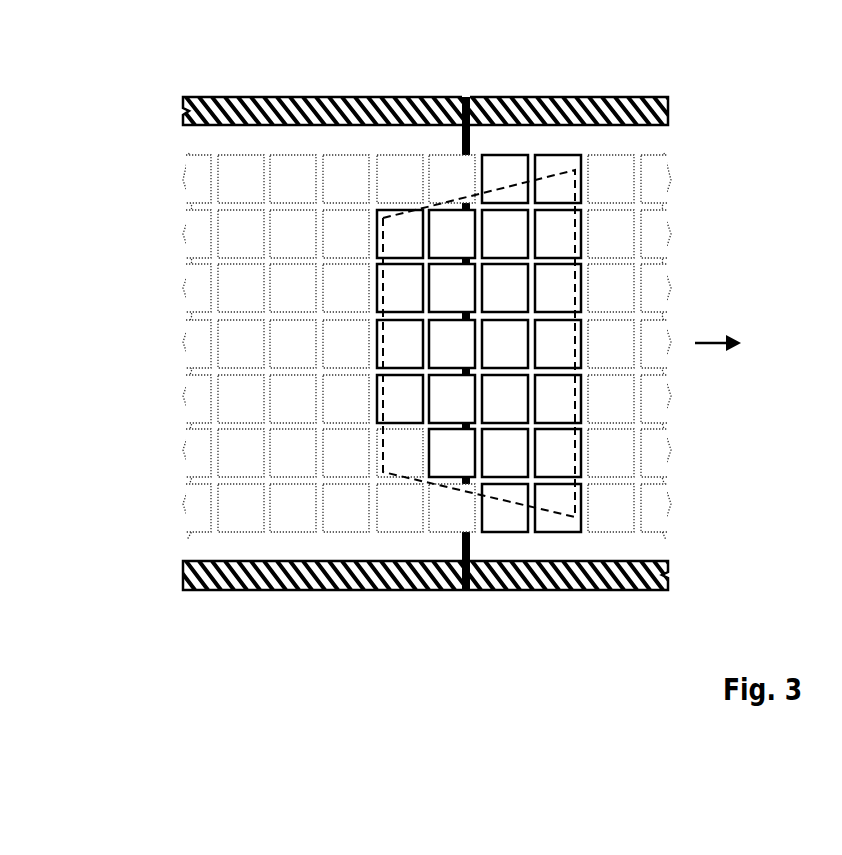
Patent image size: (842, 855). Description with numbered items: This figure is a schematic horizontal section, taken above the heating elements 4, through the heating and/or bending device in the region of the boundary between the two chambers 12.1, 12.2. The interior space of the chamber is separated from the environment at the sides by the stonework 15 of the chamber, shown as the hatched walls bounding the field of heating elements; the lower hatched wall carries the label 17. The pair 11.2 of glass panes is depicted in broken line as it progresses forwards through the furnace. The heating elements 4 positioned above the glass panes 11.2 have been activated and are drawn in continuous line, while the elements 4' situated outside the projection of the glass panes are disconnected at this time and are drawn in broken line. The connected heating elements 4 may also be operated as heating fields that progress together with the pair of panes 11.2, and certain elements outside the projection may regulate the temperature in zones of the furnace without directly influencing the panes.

The heating elements 4 is at (479, 398).
The heating elements not in use 4' is at (364, 398).
The pair of glass panes 11.2 is at (603, 445).
The chamber 12.1 is at (285, 105).
The chamber 12.2 is at (525, 107).
The stonework 15 is at (208, 124).
The bottom wall 17 is at (633, 561).